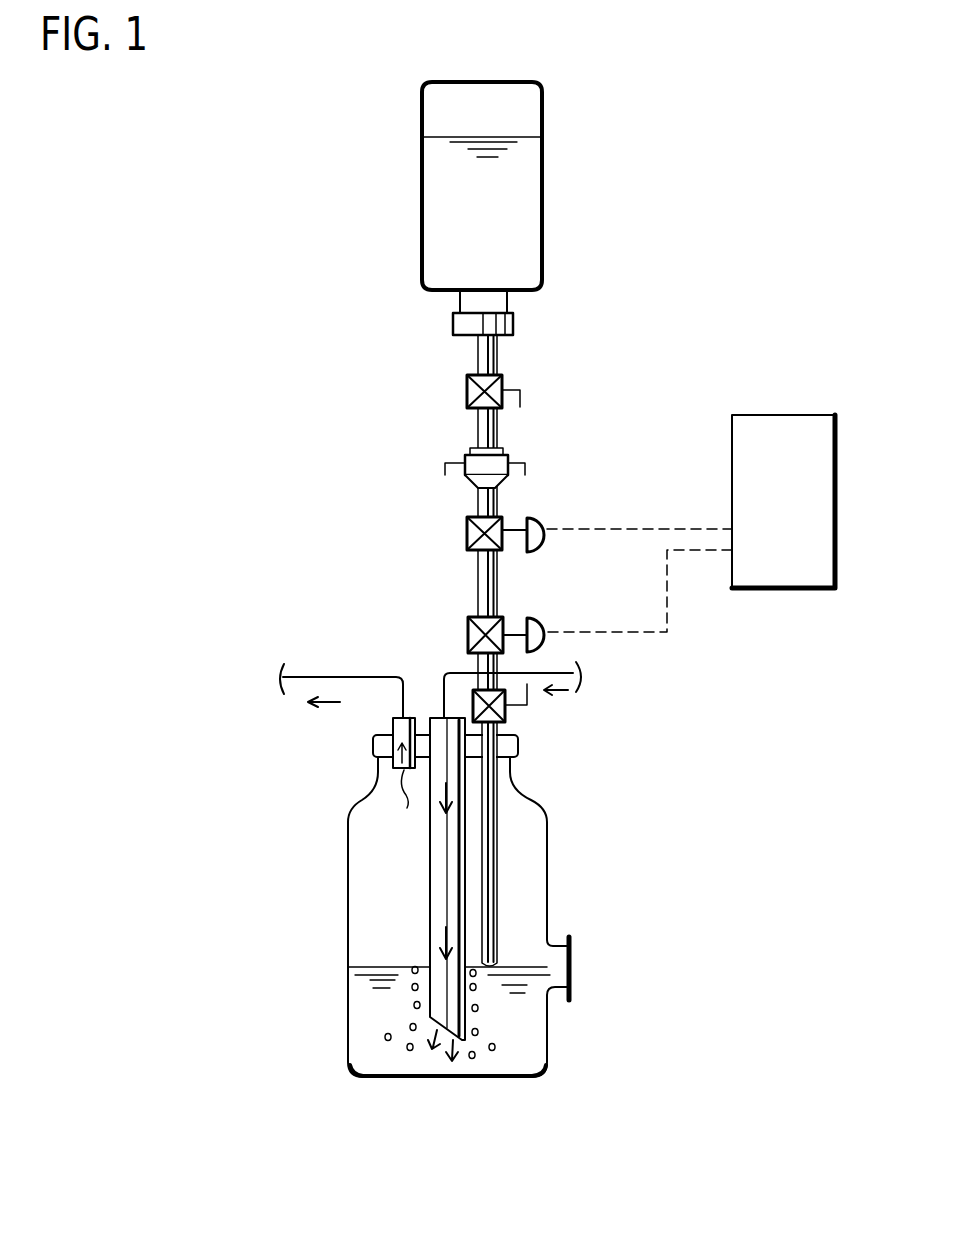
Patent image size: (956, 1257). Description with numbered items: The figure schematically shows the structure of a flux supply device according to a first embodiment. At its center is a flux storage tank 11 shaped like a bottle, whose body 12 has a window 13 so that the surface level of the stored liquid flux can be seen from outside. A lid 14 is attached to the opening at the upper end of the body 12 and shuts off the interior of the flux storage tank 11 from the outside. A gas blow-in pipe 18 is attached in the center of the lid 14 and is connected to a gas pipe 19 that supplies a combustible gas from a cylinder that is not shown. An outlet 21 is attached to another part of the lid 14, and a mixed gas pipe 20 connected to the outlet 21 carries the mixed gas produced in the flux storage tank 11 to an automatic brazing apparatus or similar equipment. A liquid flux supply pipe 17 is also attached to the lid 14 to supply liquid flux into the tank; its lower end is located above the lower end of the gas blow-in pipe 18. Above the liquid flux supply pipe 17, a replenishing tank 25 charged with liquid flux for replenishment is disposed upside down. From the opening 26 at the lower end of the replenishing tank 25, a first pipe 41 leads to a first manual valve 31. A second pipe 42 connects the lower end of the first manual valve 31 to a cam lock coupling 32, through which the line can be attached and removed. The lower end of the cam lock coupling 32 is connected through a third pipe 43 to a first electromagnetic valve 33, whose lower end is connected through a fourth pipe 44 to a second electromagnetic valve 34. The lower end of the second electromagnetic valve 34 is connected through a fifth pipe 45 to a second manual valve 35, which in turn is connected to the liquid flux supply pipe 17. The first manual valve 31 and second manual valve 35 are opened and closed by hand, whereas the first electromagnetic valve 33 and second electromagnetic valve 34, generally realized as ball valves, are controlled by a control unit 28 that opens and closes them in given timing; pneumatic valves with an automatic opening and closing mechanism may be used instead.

The flux storage tank 11 is at (332, 893).
The body 12 is at (547, 862).
The window 13 is at (572, 973).
The lid 14 is at (520, 752).
The liquid flux supply pipe 17 is at (497, 895).
The gas blow-in pipe 18 is at (430, 858).
The gas pipe 19 is at (562, 670).
The mixed gas pipe 20 is at (330, 677).
The outlet 21 is at (390, 733).
The replenishing tank 25 is at (543, 110).
The opening 26 is at (515, 325).
The control unit 28 is at (778, 415).
The first manual valve 31 is at (502, 378).
The cam lock coupling 32 is at (510, 450).
The first electromagnetic valve 33 is at (503, 518).
The second electromagnetic valve 34 is at (503, 618).
The second manual valve 35 is at (507, 712).
The first pipe 41 is at (473, 358).
The second pipe 42 is at (473, 430).
The third pipe 43 is at (473, 503).
The fourth pipe 44 is at (477, 575).
The fifth pipe 45 is at (467, 663).